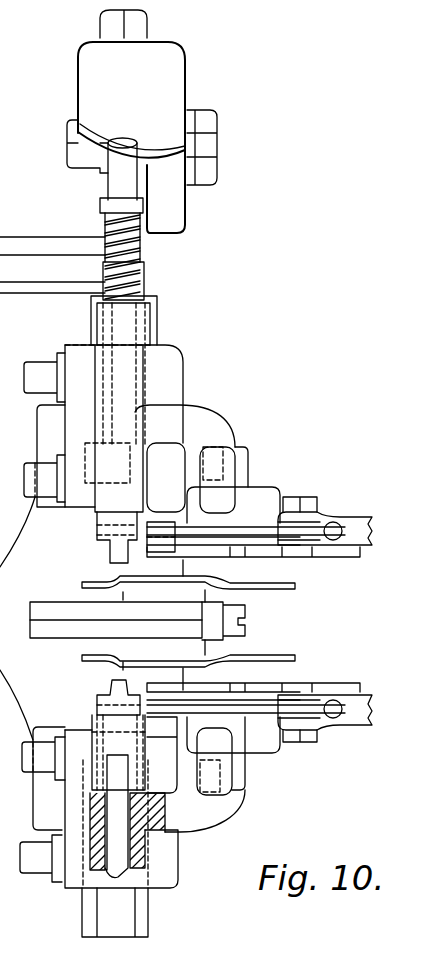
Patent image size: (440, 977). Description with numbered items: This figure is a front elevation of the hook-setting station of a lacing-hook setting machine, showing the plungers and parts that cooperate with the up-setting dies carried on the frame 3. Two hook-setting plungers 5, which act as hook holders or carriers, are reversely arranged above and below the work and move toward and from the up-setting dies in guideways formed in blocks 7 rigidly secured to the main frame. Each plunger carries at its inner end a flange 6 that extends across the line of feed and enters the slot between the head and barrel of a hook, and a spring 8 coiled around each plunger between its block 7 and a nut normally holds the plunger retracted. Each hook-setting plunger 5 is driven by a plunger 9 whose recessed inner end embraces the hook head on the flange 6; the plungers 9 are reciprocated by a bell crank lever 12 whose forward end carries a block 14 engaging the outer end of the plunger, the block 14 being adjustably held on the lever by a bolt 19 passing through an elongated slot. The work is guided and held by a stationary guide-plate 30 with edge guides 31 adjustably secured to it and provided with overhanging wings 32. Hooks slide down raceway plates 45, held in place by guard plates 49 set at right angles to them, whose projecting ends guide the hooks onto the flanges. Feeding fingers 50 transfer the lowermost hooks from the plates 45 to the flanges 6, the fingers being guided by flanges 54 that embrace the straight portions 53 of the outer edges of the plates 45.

The frame 3 is at (18, 512).
The hook-setting plunger 5 is at (112, 855).
The flange 6 is at (97, 700).
The block 7 is at (145, 862).
The spring 8 is at (140, 247).
The plunger 9 is at (105, 915).
The bell crank lever 12 is at (176, 200).
The block 14 is at (122, 176).
The bolt 19 is at (77, 150).
The guide-plate 30 is at (53, 610).
The edge guide 31 is at (103, 596).
The overhanging wing 32 is at (262, 656).
The raceway plate 45 is at (262, 702).
The guard plate 49 is at (347, 690).
The feeding finger 50 is at (262, 712).
The straight portion 53 is at (265, 640).
The flange 54 is at (160, 710).